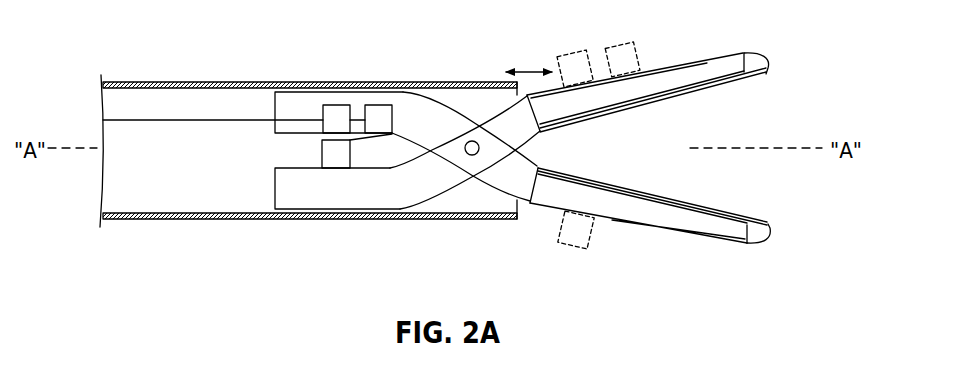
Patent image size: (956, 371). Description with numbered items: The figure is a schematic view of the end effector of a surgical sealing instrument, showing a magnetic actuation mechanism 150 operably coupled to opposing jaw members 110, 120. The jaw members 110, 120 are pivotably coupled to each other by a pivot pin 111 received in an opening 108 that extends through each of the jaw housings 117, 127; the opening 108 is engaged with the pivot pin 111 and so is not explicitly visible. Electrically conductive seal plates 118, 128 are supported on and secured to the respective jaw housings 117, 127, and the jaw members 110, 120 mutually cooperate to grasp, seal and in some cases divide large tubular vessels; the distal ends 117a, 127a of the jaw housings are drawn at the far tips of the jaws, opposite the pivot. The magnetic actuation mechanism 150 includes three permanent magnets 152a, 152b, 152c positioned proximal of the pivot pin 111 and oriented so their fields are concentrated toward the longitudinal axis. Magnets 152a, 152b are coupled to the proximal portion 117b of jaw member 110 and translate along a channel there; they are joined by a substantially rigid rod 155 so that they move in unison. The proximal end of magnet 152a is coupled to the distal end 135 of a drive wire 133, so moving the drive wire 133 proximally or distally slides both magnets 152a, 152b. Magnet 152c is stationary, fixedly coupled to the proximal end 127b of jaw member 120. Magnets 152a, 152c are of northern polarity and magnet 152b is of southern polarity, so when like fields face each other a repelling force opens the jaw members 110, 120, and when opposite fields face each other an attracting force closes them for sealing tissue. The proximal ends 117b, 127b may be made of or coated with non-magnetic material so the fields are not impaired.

The drive wire 133 is at (177, 118).
The distal end of the drive wire 135 is at (299, 119).
The magnetic actuation mechanism 150 is at (266, 151).
The magnet 152a is at (330, 105).
The magnet 152b is at (378, 105).
The magnet 152c is at (322, 160).
The rigid rod 155 is at (352, 150).
The proximal portion of jaw member 110 117b is at (406, 109).
The proximal end of jaw member 120 127b is at (406, 186).
The opening 108 is at (472, 130).
The pivot pin 111 is at (473, 157).
The jaw housing 127 is at (695, 76).
The distal end of jaw member 127 127a is at (803, 45).
The jaw member 120 is at (784, 60).
The seal plate 128 is at (693, 95).
The jaw housing 117 is at (696, 220).
The distal end of jaw member 117 117a is at (804, 245).
The jaw member 110 is at (779, 232).
The seal plate 118 is at (660, 195).